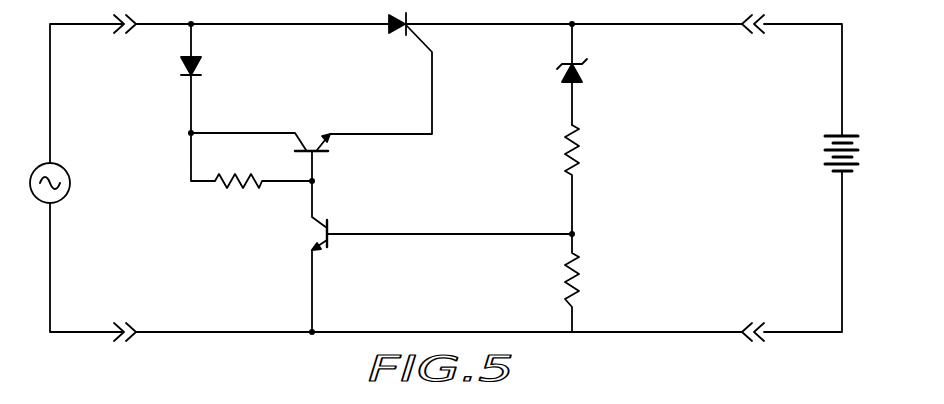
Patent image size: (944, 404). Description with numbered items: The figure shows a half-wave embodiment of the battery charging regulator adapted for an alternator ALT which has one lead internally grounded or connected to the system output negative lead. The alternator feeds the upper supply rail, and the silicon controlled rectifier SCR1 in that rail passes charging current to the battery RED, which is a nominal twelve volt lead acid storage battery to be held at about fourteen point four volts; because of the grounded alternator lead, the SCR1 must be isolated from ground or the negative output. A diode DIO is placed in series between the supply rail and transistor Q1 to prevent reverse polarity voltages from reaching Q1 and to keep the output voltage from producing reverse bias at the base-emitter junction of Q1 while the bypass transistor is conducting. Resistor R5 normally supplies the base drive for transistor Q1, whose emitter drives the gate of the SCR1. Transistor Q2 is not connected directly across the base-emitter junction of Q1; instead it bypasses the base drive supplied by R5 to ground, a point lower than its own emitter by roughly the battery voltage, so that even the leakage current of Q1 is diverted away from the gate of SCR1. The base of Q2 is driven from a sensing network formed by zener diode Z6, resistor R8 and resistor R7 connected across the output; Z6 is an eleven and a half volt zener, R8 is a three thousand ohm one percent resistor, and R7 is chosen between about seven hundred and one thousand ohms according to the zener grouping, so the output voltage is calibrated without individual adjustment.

The alternator ALT is at (58, 199).
The diode DIO is at (210, 78).
The silicon controlled rectifier SCR1 is at (425, 68).
The transistor Q1 is at (311, 157).
The transistor Q2 is at (442, 256).
The resistor R5 is at (251, 174).
The zener diode Z6 is at (587, 74).
The resistor R8 is at (590, 179).
The resistor R7 is at (590, 283).
The battery RED is at (815, 87).